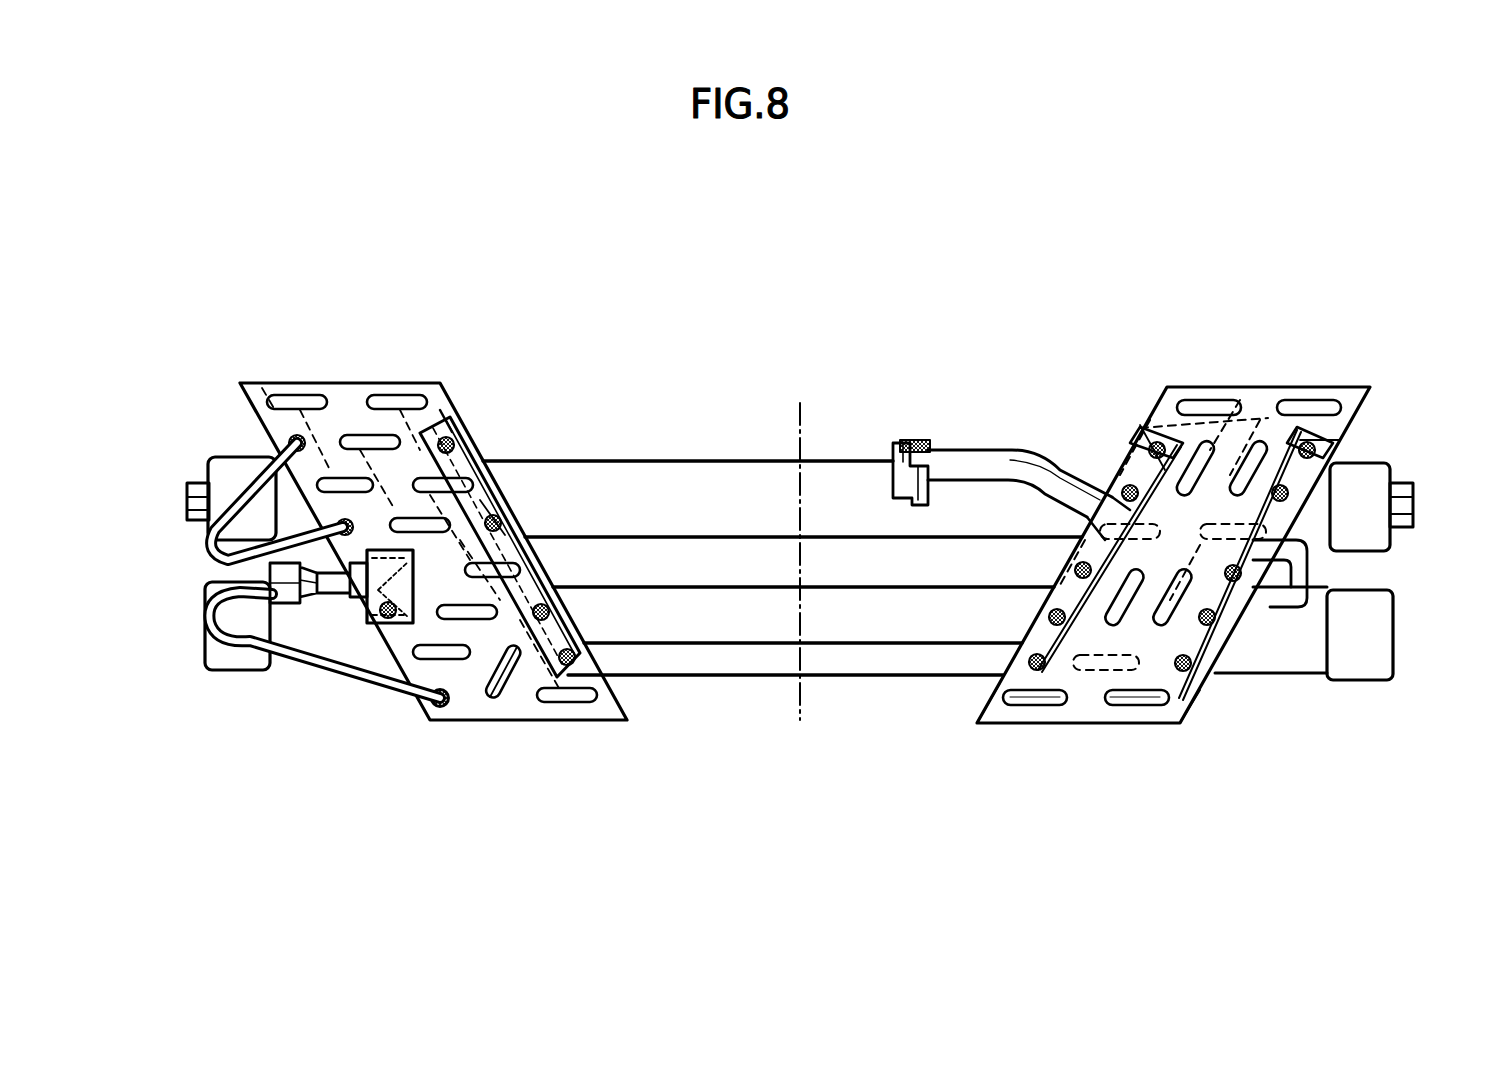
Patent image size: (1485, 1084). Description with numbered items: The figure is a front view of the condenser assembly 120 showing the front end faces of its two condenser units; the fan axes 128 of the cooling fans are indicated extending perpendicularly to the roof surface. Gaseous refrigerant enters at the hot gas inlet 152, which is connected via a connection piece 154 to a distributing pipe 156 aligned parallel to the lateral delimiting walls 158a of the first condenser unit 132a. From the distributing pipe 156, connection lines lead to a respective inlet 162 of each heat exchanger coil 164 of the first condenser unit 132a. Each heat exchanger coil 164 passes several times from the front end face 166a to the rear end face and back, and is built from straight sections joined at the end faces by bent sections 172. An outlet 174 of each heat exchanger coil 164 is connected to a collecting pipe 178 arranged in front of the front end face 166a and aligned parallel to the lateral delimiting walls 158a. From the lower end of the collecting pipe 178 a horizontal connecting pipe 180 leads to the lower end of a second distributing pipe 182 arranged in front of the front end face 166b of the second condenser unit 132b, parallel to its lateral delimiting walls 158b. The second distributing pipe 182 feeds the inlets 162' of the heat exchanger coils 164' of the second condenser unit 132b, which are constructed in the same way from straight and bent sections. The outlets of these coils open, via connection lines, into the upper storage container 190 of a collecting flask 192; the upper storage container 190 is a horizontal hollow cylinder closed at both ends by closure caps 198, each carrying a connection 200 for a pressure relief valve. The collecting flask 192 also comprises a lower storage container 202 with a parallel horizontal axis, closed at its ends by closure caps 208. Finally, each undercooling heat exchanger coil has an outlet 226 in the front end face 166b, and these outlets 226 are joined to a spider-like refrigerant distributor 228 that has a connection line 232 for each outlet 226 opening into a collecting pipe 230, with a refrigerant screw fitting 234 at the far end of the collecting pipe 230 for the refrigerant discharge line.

The condenser assembly 120 is at (642, 430).
The fan axes 128 is at (806, 400).
The first condenser unit 132a is at (1300, 377).
The second condenser unit 132b is at (302, 378).
The hot gas inlet 152 is at (900, 440).
The connection piece 154 is at (990, 470).
The distributing pipe 156 is at (1140, 455).
The lateral delimiting walls 158a is at (1157, 442).
The lateral delimiting walls 158b is at (248, 418).
The inlet 162 is at (946, 741).
The inlets 162' is at (543, 422).
The heat exchanger coil 164 is at (1022, 748).
The heat exchanger coils 164' is at (548, 722).
The front end face 166a is at (1247, 388).
The front end face 166b is at (355, 395).
The bent sections 172 is at (1135, 706).
The outlet 174 is at (1330, 440).
The collecting pipe 178 is at (1205, 690).
The horizontal connecting pipe 180 is at (845, 660).
The second distributing pipe 182 is at (455, 412).
The upper storage container 190 is at (700, 480).
The collecting flask 192 is at (750, 436).
The closure caps 198 is at (250, 470).
The connection for a pressure relief valve 200 is at (190, 455).
The lower storage container 202 is at (740, 630).
The closure caps 208 is at (222, 670).
The outlet 226 is at (445, 706).
The spider-like refrigerant distributor 228 is at (286, 690).
The collecting pipe 230 is at (322, 610).
The connection line 232 is at (235, 558).
The refrigerant screw fitting 234 is at (397, 625).